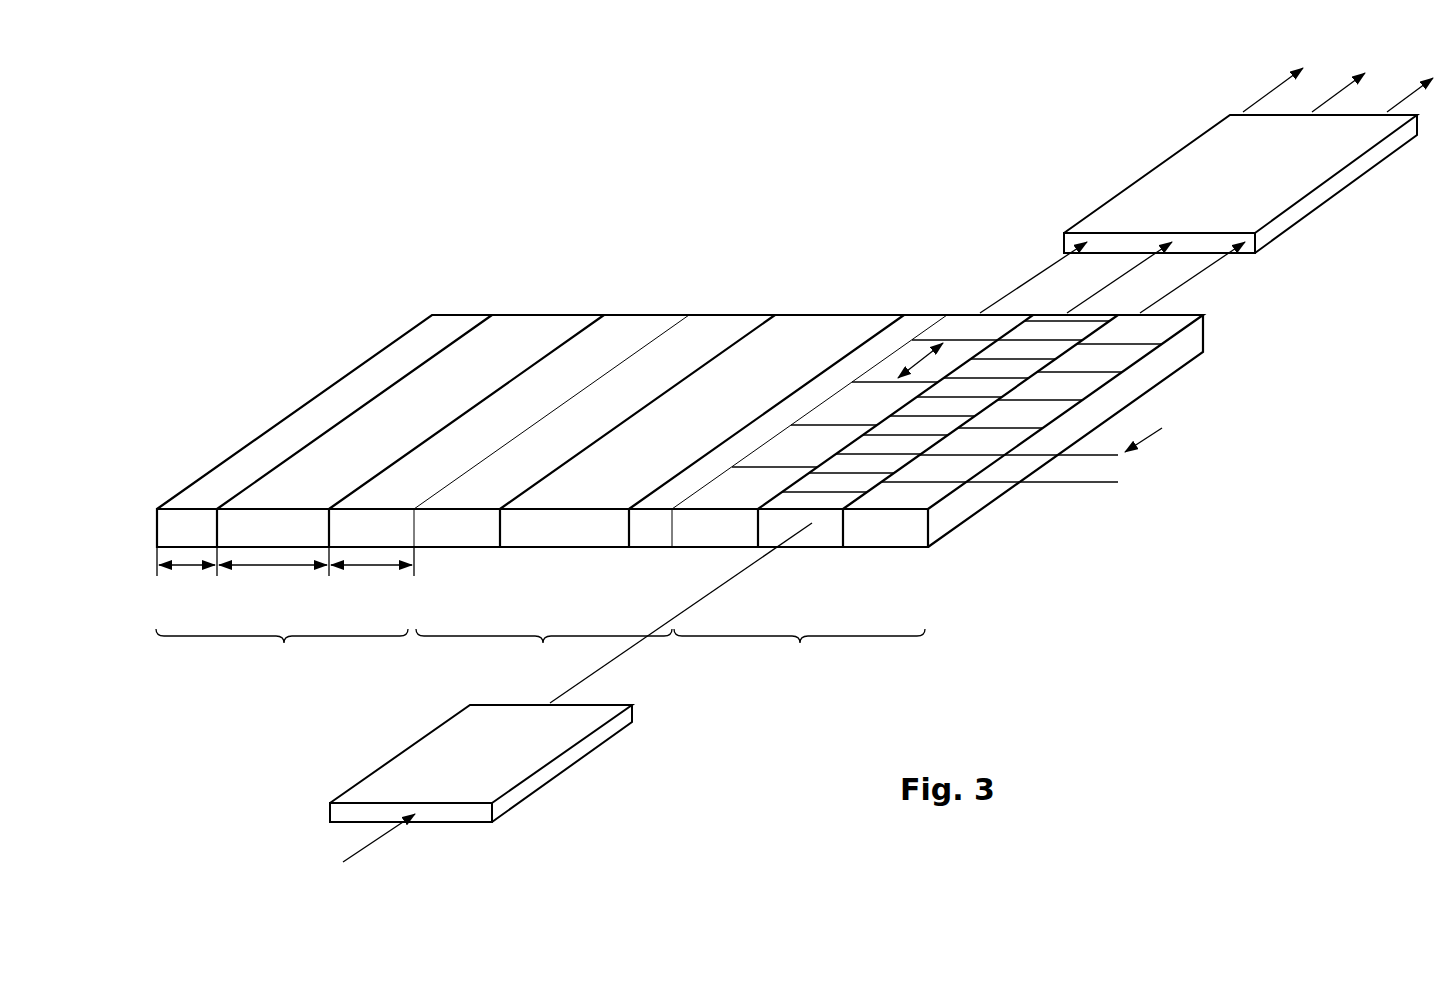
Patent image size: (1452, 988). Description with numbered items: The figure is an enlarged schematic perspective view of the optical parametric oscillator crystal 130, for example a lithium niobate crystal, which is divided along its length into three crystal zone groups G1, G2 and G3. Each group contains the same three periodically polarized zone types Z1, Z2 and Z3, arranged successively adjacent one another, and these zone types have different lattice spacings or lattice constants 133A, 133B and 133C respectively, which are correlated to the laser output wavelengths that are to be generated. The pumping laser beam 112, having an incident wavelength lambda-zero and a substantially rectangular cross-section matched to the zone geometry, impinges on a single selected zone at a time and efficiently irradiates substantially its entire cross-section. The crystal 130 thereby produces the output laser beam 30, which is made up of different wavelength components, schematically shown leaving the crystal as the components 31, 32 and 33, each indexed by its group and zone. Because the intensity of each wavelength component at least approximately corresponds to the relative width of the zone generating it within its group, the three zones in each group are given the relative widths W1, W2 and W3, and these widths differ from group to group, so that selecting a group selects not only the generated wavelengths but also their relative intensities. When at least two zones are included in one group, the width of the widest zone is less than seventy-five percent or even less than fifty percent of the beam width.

The crystal 130 is at (970, 497).
The output laser beam 30 is at (1128, 205).
The output beam wavelength component (λ+λ*) 31 is at (1258, 97).
The output beam wavelength component (λ+λ*) 32 is at (1340, 92).
The output beam wavelength component (λ+λ*) 33 is at (1425, 85).
The pumping laser beam 112 is at (635, 802).
The lattice constant 133A is at (915, 363).
The lattice constant 133B is at (1004, 367).
The lattice constant 133C is at (1067, 518).
The periodically polarized zone Z1 is at (417, 335).
The periodically polarized zone Z2 is at (518, 337).
The periodically polarized zone Z3 is at (622, 333).
The zone width W1 is at (178, 567).
The zone width W2 is at (268, 567).
The zone width W3 is at (370, 567).
The crystal zone group G1 is at (282, 659).
The crystal zone group G2 is at (544, 659).
The crystal zone group G3 is at (799, 659).